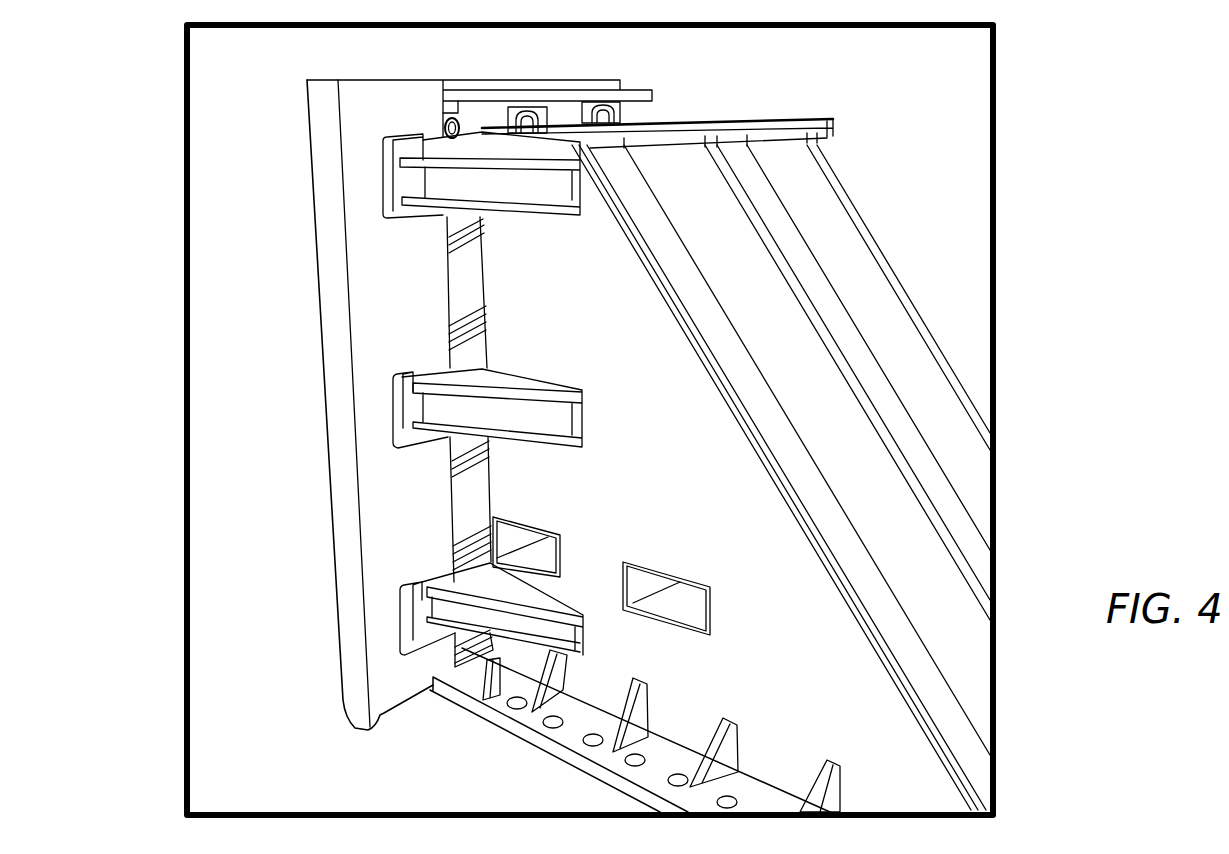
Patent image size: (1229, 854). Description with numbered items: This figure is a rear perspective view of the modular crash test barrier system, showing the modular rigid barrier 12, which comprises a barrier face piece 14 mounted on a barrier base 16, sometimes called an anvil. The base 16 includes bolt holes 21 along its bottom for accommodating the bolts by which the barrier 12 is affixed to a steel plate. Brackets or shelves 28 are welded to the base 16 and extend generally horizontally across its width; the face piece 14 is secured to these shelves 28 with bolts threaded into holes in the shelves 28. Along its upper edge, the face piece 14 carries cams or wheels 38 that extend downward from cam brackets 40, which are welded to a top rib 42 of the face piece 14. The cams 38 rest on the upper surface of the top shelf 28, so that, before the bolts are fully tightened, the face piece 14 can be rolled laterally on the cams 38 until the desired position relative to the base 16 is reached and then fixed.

The modular rigid barrier 12 is at (305, 275).
The barrier face piece 14 is at (421, 527).
The barrier base 16 is at (687, 491).
The bolt holes 21 is at (640, 757).
The shelf 28 is at (508, 187).
The cam 38 is at (440, 125).
The cam bracket 40 is at (463, 108).
The top rib 42 is at (453, 108).